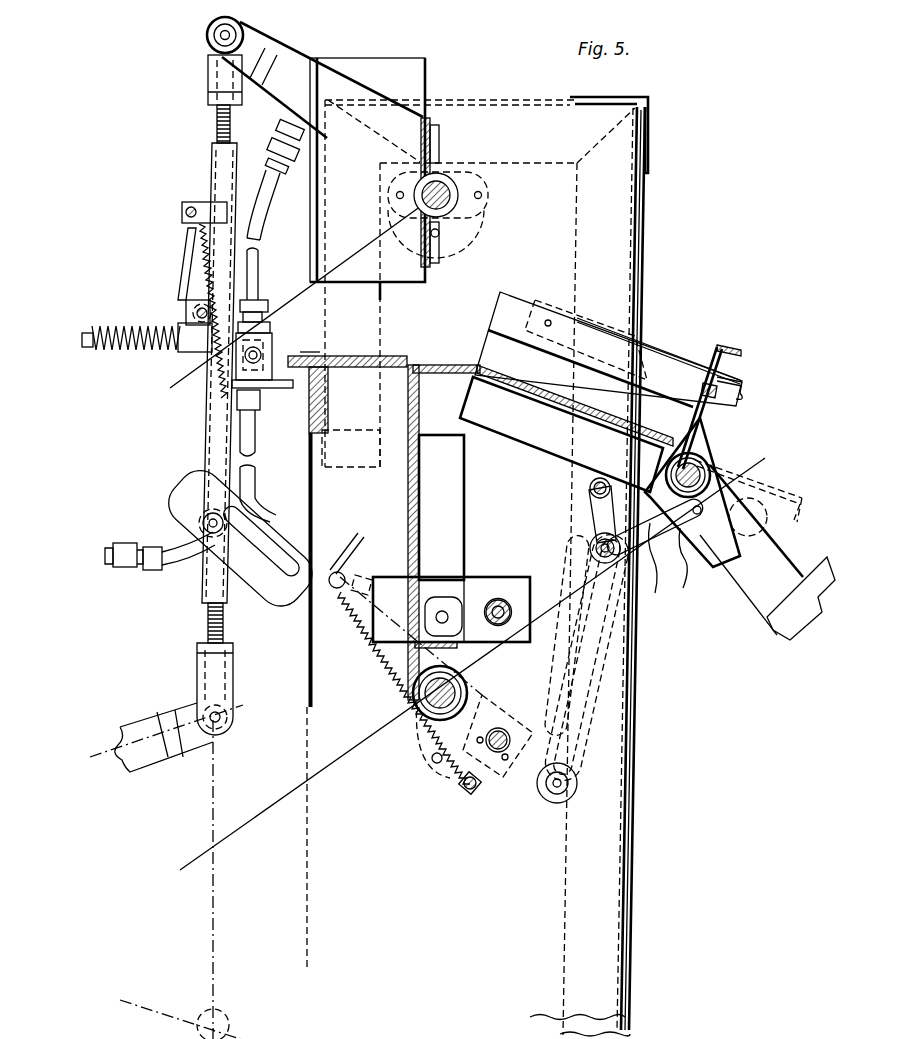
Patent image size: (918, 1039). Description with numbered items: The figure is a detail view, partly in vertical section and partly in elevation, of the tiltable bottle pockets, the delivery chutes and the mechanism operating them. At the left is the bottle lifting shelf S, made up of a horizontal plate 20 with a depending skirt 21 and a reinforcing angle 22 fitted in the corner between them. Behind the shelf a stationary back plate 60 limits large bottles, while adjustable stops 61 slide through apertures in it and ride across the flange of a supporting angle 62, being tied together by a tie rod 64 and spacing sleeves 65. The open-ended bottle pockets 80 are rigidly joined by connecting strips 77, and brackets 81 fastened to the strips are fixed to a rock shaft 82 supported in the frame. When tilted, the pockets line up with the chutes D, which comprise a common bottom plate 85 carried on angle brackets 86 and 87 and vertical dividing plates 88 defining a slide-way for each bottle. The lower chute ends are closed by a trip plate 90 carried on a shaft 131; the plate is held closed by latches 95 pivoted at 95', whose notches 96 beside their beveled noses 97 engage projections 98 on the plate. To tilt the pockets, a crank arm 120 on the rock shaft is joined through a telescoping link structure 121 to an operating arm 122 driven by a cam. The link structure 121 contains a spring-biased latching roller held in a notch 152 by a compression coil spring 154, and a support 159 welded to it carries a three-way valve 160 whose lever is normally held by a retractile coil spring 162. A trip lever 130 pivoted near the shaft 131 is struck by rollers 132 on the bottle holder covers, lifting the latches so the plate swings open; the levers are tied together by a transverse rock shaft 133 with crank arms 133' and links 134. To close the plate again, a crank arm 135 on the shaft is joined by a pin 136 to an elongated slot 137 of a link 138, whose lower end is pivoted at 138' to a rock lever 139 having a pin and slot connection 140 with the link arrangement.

The horizontal plate 20 is at (365, 353).
The depending skirt 21 is at (318, 514).
The reinforcing angle 22 is at (345, 373).
The bottle lifting shelf S is at (314, 350).
The inclined chutes or slides D is at (516, 306).
The back plate 60 is at (410, 540).
The adjustable stops 61 is at (473, 597).
The supporting angle 62 is at (457, 648).
The tie rod 64 is at (498, 602).
The spacing sleeves 65 is at (506, 605).
The connecting strips 77 is at (428, 118).
The bottle pockets 80 is at (388, 77).
The brackets 81 is at (438, 148).
The rock shaft 82 is at (452, 190).
The common bottom plate 85 is at (470, 372).
The angle bracket 86 is at (445, 380).
The angle bracket 87 is at (523, 432).
The vertical dividing plates 88 is at (558, 318).
The trip plate 90 is at (715, 347).
The latches 95 is at (777, 368).
The latch pivot and flange 95' is at (644, 324).
The notches 96 is at (720, 377).
The beveled noses 97 is at (717, 393).
The projections 98 is at (738, 400).
The crank arm 120 is at (280, 80).
The link structure 121 is at (220, 178).
The operating arm 122 is at (133, 733).
The trip lever 130 is at (715, 542).
The shaft 131 is at (700, 465).
The rollers or pins 132 is at (770, 548).
The transverse rock shaft 133 is at (684, 574).
The crank arms 133' is at (575, 514).
The links 134 is at (668, 545).
The crank arm 135 is at (654, 590).
The pin 136 is at (607, 567).
The elongated slot 137 is at (587, 680).
The link 138 is at (619, 657).
The pivot 138' is at (544, 808).
The rock lever 139 is at (483, 695).
The pin and slot connection 140 is at (262, 535).
The notch 152 is at (187, 263).
The compression coil spring 154 is at (132, 357).
The support 159 is at (267, 391).
The three-way valve 160 is at (262, 352).
The retractile coil spring 162 is at (190, 240).